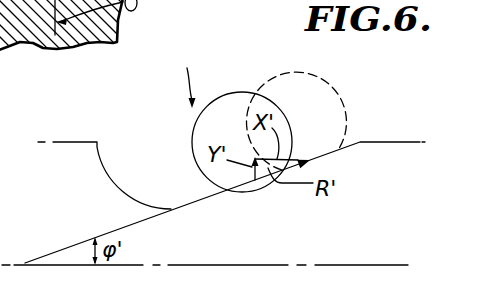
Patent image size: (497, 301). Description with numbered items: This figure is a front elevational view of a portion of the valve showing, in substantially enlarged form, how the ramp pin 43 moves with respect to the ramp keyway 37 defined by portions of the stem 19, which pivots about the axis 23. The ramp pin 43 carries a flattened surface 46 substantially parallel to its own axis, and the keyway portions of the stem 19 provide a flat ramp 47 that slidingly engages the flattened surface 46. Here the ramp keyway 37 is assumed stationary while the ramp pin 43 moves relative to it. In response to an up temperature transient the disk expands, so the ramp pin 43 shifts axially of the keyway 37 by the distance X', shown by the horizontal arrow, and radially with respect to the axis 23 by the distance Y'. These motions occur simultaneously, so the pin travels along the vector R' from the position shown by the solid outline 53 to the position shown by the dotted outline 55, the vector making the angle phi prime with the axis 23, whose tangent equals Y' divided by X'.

The stem 19 is at (376, 150).
The axis 23 is at (335, 263).
The ramp keyway 37 is at (105, 170).
The ramp pin 43 is at (237, 92).
The flattened surface 46 is at (242, 192).
The ramp 47 is at (203, 198).
The solid outline 53 is at (175, 81).
The dotted outline 55 is at (348, 80).